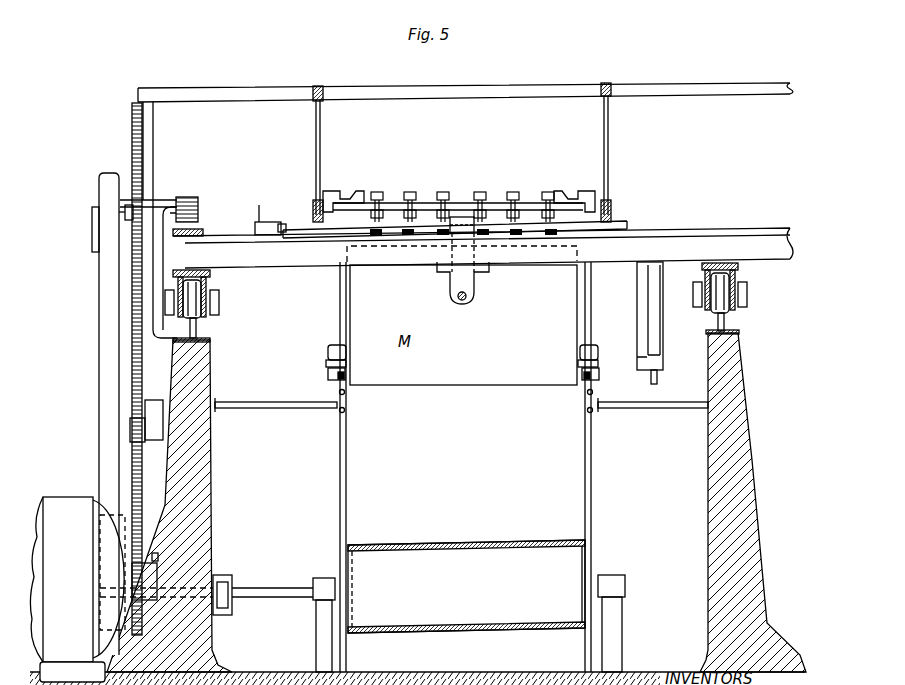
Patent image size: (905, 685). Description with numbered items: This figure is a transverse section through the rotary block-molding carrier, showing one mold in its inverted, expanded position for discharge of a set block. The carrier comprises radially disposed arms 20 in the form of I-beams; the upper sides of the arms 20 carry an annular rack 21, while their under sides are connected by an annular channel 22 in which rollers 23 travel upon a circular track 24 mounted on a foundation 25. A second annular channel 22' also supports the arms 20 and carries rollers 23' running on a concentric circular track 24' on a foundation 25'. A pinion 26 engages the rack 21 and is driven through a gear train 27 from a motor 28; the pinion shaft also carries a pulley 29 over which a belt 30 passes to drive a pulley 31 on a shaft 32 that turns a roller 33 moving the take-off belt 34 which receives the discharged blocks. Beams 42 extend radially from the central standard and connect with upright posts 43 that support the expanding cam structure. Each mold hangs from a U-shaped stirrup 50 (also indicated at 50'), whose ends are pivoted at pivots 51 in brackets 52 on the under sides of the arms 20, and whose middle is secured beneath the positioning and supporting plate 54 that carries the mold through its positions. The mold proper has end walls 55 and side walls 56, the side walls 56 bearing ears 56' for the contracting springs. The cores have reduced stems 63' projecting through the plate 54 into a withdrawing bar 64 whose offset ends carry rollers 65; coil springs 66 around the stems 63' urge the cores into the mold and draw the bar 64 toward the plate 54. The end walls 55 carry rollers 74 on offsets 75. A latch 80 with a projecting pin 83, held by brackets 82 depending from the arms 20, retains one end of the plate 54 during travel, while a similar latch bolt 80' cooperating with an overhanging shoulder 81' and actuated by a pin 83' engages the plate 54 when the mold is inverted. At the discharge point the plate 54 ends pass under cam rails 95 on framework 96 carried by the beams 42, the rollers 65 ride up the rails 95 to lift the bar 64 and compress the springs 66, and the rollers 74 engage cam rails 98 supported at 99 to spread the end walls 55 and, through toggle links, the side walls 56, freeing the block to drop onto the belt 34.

The arm 20 is at (752, 232).
The annular rack 21 is at (204, 228).
The annular channel 22 is at (205, 293).
The annular channel 22' is at (734, 286).
The roller 23 is at (211, 305).
The roller 23' is at (746, 293).
The circular track 24 is at (207, 334).
The circular track 24' is at (742, 322).
The foundation 25 is at (174, 506).
The foundation 25' is at (735, 502).
The pinion 26 is at (185, 197).
The gear train 27 is at (131, 124).
The motor 28 is at (65, 504).
The pulley 29 is at (92, 194).
The belt 30 is at (99, 270).
The pulley 31 is at (99, 568).
The shaft 32 is at (258, 588).
The roller 33 is at (482, 556).
The take-off belt 34 is at (418, 546).
The beam 42 is at (533, 88).
The upright post 43 is at (154, 131).
The U-shaped stirrup 50 is at (468, 218).
The bracket 50' is at (435, 280).
The pivot 51 is at (465, 302).
The bracket 52 is at (475, 292).
The positioning and supporting plate 54 is at (565, 221).
The end wall 55 is at (342, 302).
The side wall 56 is at (594, 333).
The ear 56' is at (334, 341).
The stem 63' is at (462, 197).
The withdrawing bar 64 is at (394, 203).
The roller 65 is at (334, 191).
The coil spring 66 is at (366, 244).
The roller 74 is at (327, 361).
The offset 75 is at (328, 375).
The latch 80 is at (630, 374).
The latch bolt 80' is at (264, 244).
The overhanging shoulder 81' is at (273, 209).
The bracket 82 is at (660, 305).
The projecting pin 83 is at (671, 379).
The pin 83' is at (251, 201).
The cam rail 95 is at (320, 209).
The framework 96 is at (316, 133).
The cam rail 98 is at (338, 389).
The support 99 is at (335, 424).